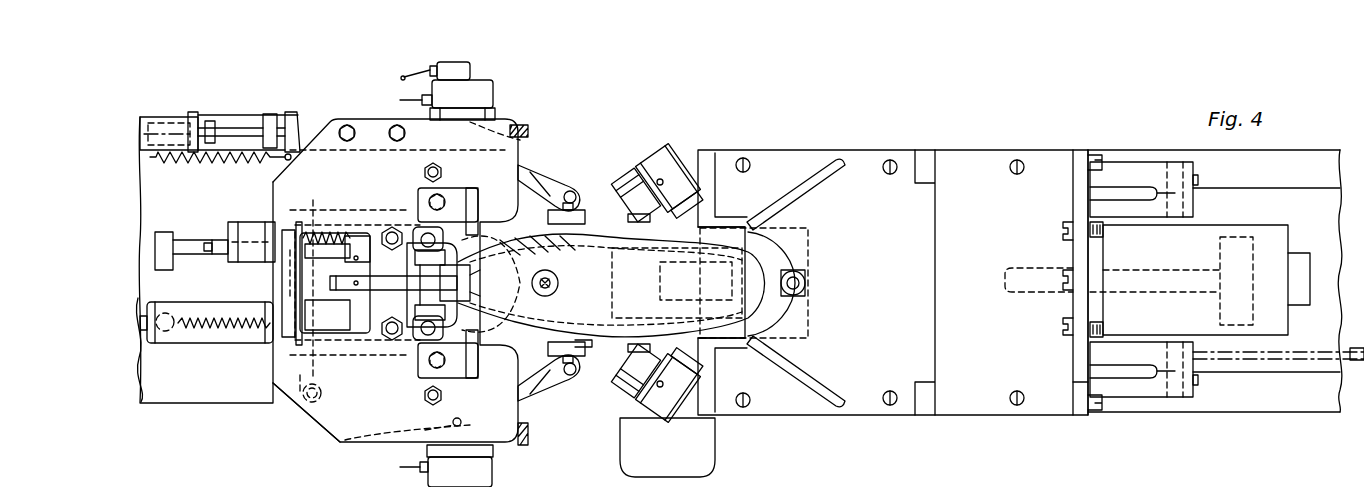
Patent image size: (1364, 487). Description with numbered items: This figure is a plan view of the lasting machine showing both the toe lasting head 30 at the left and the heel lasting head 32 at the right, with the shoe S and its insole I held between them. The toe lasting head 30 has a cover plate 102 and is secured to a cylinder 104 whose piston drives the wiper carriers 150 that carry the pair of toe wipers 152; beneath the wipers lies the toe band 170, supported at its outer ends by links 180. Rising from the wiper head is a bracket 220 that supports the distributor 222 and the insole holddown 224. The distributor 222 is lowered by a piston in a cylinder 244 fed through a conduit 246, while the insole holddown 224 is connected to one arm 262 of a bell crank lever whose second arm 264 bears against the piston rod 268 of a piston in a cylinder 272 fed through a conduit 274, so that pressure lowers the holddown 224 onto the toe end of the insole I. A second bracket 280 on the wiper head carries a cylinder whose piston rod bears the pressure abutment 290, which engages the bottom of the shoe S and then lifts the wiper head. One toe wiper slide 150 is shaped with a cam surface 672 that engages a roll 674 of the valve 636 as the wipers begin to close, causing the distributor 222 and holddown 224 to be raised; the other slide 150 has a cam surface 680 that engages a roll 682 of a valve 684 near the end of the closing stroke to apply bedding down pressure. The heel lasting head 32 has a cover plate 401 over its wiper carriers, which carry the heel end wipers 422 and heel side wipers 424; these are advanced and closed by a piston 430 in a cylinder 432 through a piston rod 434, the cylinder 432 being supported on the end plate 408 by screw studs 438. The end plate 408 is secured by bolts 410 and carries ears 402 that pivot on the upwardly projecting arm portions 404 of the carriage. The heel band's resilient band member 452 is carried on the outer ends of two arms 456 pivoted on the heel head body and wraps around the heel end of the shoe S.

The toe lasting head 30 is at (301, 427).
The heel lasting head 32 is at (866, 424).
The cover plate 102 is at (366, 418).
The cylinder 104 is at (191, 248).
The wiper carriers 150 is at (522, 141).
The toe wipers 152 is at (560, 186).
The toe band 170 is at (582, 352).
The links 180 is at (526, 166).
The bracket 220 is at (282, 286).
The distributor 222 is at (487, 226).
The insole holddown 224 is at (480, 283).
The cylinder 244 is at (212, 343).
The conduit 246 is at (143, 372).
The arm of bell crank lever 262 is at (385, 276).
The second arm of bell crank lever 264 is at (356, 234).
The piston rod 268 is at (320, 232).
The cylinder 272 is at (252, 222).
The conduit 274 is at (214, 254).
The second bracket 280 is at (444, 195).
The pressure abutment 290 is at (558, 286).
The cover plate 401 is at (907, 266).
The ears 402 is at (1130, 162).
The arm portions 404 is at (1127, 210).
The end plate 408 is at (1073, 383).
The bolts 410 is at (1096, 156).
The heel end wipers 422 is at (764, 252).
The heel side wipers 424 is at (682, 215).
The piston 430 is at (1241, 236).
The cylinder 432 is at (1292, 254).
The piston rod 434 is at (1040, 295).
The screw studs 438 is at (1064, 230).
The resilient band member 452 is at (628, 178).
The arms 456 is at (668, 160).
The valve 636 is at (473, 90).
The cam surface 672 is at (529, 127).
The roll 674 is at (480, 112).
The cam surface 680 is at (522, 446).
The roll 682 is at (430, 430).
The valve 684 is at (476, 484).
The shoe S is at (598, 227).
The insole I is at (624, 296).